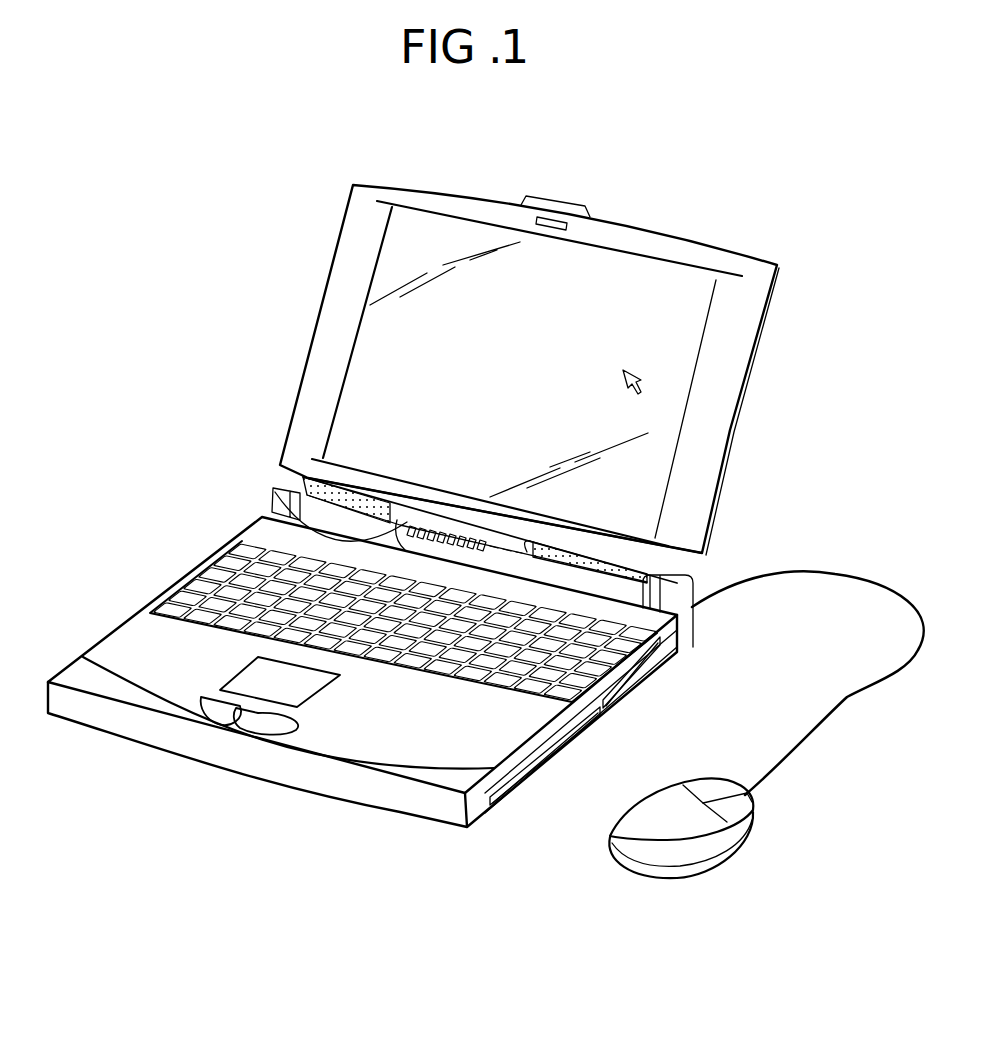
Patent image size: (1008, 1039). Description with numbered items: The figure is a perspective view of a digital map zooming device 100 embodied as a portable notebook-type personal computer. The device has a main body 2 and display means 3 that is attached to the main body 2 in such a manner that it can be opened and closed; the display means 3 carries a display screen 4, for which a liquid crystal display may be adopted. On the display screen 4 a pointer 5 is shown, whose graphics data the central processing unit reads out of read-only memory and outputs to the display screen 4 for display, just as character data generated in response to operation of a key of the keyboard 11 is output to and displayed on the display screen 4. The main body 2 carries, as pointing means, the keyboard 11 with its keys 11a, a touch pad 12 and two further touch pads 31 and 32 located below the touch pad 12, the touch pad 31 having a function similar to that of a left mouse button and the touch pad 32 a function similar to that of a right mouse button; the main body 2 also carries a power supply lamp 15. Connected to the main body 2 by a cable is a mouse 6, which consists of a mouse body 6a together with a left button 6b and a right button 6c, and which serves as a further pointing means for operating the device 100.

The digital map zooming device 100 is at (783, 343).
The main body 2 is at (445, 812).
The display means 3 is at (756, 270).
The display screen 4 is at (697, 285).
The pointer 5 is at (644, 383).
The mouse 6 is at (728, 855).
The mouse body 6a is at (647, 815).
The left button 6b is at (703, 787).
The right button 6c is at (733, 807).
The keyboard 11 is at (227, 577).
The keys of keyboard 11a is at (432, 687).
The touch pad 12 is at (248, 680).
The power supply lamp 15 is at (303, 490).
The touch pad 31 is at (212, 708).
The touch pad 32 is at (255, 720).